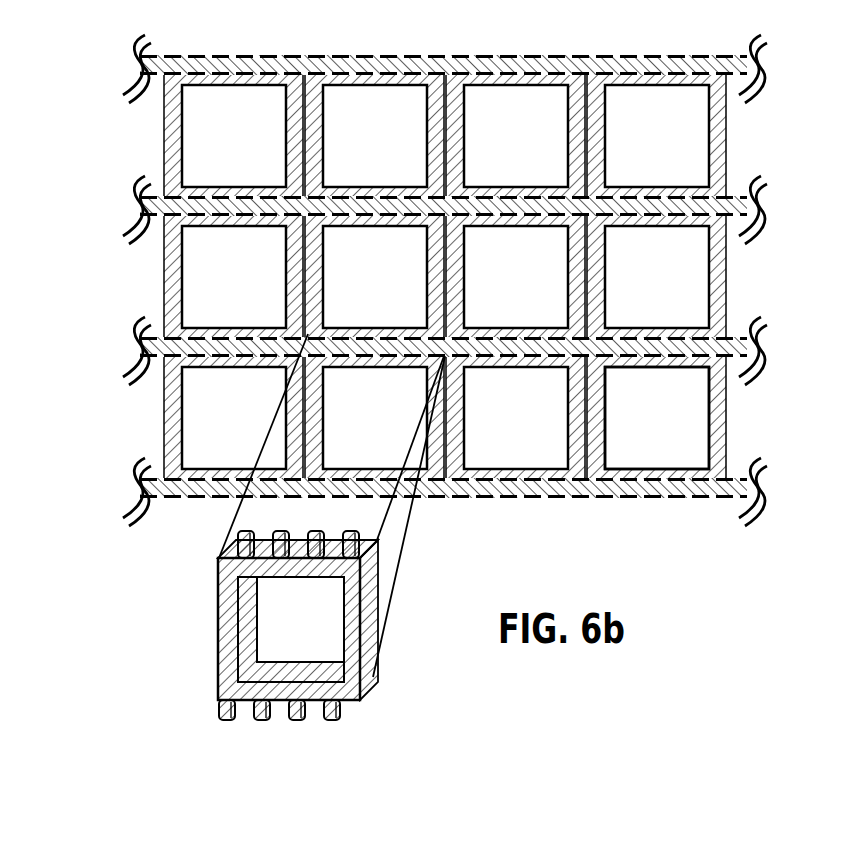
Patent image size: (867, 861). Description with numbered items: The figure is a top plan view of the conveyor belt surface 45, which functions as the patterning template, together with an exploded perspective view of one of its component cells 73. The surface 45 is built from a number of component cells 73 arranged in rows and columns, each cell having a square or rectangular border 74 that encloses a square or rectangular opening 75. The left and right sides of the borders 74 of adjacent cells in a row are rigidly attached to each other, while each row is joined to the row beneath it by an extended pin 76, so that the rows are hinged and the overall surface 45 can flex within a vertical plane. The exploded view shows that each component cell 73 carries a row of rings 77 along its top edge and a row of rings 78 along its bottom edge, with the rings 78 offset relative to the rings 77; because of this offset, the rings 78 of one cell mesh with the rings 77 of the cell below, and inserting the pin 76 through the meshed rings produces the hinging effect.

The surface 45 is at (410, 276).
The component cell 73 is at (122, 645).
The border 74 is at (718, 283).
The opening 75 is at (678, 402).
The extended pin 76 is at (234, 207).
The rings 77 is at (278, 529).
The rings 78 is at (296, 721).